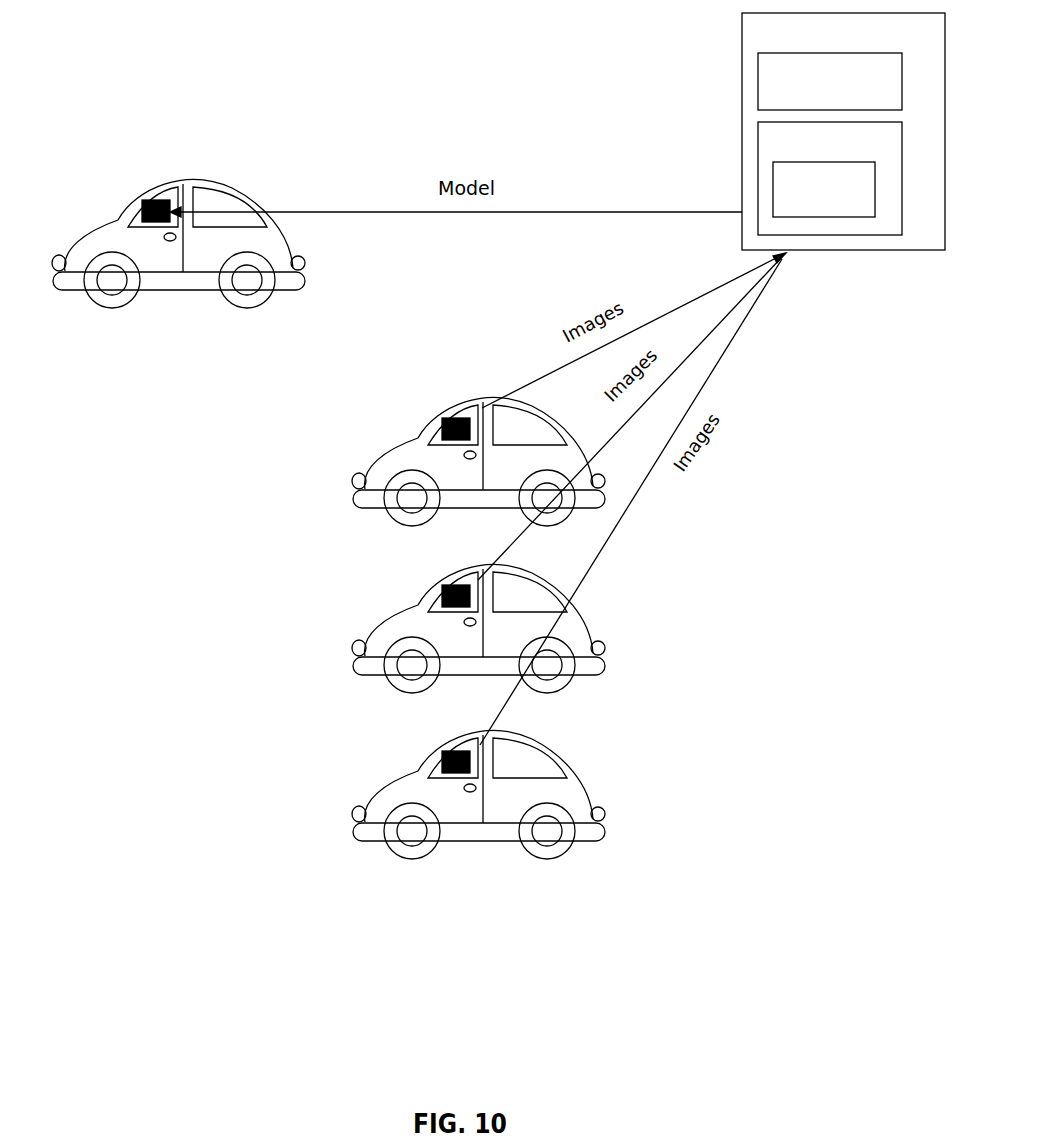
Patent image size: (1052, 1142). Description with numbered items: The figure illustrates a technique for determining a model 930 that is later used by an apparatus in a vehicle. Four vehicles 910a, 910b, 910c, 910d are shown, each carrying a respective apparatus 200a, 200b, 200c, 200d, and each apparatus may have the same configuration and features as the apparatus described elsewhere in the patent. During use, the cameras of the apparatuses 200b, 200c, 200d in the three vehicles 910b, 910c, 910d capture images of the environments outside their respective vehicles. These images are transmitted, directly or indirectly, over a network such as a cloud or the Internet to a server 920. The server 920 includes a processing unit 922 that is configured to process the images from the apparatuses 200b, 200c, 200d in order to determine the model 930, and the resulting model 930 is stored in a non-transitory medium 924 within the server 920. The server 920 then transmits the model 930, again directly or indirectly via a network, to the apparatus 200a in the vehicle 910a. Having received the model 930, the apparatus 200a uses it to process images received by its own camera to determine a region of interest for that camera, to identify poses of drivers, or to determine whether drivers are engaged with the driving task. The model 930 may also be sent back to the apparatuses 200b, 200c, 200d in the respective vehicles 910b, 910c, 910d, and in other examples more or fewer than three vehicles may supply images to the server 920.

The vehicle 910a is at (103, 235).
The vehicle 910b is at (382, 481).
The vehicle 910c is at (390, 642).
The vehicle 910d is at (398, 796).
The apparatus 200a is at (170, 203).
The apparatus 200b is at (455, 420).
The apparatus 200c is at (455, 587).
The apparatus 200d is at (457, 752).
The server 920 is at (792, 48).
The processing unit 922 is at (810, 88).
The non-transitory medium 924 is at (810, 155).
The model 930 is at (825, 198).